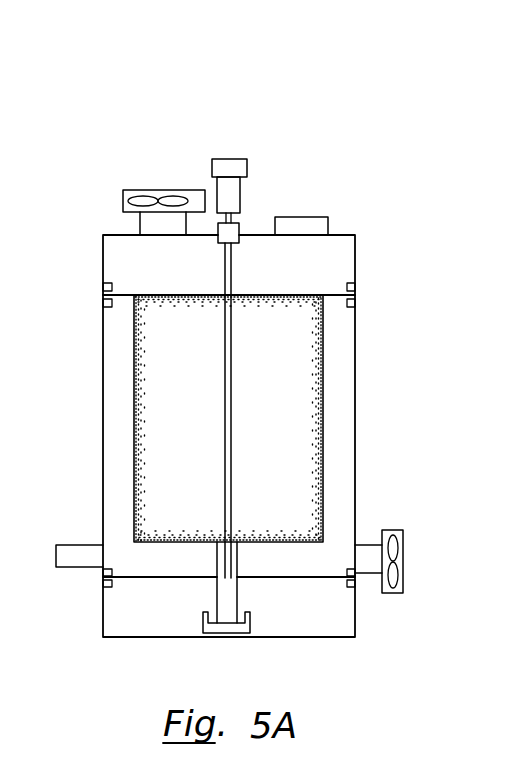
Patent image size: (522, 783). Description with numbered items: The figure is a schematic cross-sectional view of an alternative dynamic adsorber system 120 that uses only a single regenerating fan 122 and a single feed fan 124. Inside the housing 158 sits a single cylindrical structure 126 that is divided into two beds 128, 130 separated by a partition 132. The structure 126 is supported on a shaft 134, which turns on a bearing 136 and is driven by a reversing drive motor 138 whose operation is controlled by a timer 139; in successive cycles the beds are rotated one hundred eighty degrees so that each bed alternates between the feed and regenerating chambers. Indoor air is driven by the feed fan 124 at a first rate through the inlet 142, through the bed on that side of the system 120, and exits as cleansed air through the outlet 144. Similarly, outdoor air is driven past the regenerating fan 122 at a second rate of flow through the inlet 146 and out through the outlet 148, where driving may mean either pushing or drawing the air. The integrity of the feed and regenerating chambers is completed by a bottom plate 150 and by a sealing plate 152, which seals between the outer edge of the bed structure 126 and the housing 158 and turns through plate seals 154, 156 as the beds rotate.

The dynamic adsorber system 120 is at (288, 64).
The regenerating fan 122 is at (143, 197).
The feed fan 124 is at (396, 549).
The single cylindrical structure 126 is at (134, 418).
The bed 128 is at (288, 451).
The bed 130 is at (190, 451).
The partition 132 is at (232, 368).
The shaft 134 is at (238, 591).
The bearing 136 is at (229, 626).
The reversing drive motor 138 is at (236, 197).
The timer 139 is at (226, 164).
The inlet 142 is at (368, 545).
The outlet 144 is at (317, 217).
The inlet 146 is at (140, 219).
The outlet 148 is at (72, 546).
The bottom plate 150 is at (168, 578).
The sealing plate 152 is at (303, 296).
The plate seal 154 is at (357, 288).
The plate seal 156 is at (103, 300).
The housing 158 is at (357, 378).